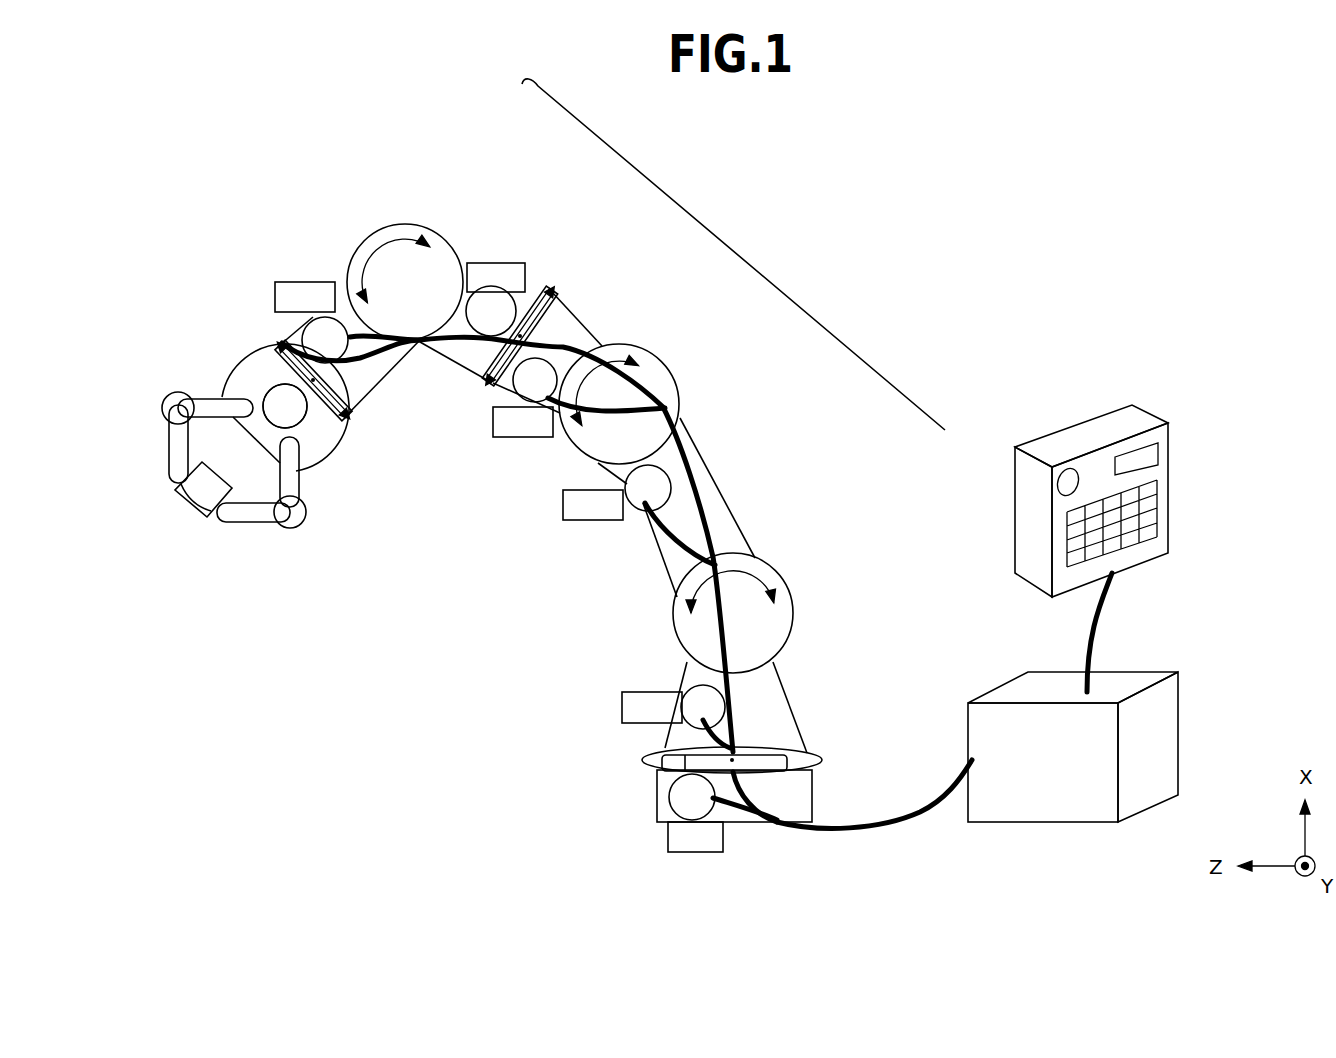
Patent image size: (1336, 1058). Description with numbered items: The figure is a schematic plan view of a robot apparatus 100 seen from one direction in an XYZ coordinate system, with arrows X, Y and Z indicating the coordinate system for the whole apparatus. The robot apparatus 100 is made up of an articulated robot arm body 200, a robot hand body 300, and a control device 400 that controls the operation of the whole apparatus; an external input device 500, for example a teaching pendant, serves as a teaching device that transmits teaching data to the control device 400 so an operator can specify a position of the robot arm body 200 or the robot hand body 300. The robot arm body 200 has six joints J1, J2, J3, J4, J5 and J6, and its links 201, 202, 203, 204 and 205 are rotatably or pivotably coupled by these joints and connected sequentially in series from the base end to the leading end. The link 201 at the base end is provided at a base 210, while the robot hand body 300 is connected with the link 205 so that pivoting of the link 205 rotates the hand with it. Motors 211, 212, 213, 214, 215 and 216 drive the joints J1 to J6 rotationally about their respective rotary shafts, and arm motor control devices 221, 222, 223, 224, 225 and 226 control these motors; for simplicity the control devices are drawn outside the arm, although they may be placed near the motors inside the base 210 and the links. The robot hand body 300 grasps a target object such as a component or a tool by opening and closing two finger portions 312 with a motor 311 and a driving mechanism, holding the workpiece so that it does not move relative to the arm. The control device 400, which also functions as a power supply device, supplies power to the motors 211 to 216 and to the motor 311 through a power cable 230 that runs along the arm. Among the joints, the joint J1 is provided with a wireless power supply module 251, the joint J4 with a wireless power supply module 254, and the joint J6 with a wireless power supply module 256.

The robot apparatus 100 is at (1029, 178).
The articulated robot arm body 200 is at (751, 263).
The link 201 is at (770, 703).
The link 202 is at (713, 500).
The link 203 is at (558, 330).
The link 204 is at (526, 268).
The link 205 is at (340, 300).
The base 210 is at (800, 792).
The motor 211 is at (680, 800).
The motor 212 is at (703, 718).
The motor 213 is at (645, 503).
The motor 214 is at (548, 375).
The motor 215 is at (480, 318).
The motor 216 is at (333, 347).
The arm motor control device 221 is at (695, 840).
The arm motor control device 222 is at (630, 707).
The arm motor control device 223 is at (590, 512).
The arm motor control device 224 is at (518, 425).
The arm motor control device 225 is at (487, 278).
The arm motor control device 226 is at (300, 292).
The power cable 230 is at (418, 340).
The wireless power supply module 251 is at (768, 764).
The wireless power supply module 254 is at (543, 290).
The wireless power supply module 256 is at (285, 343).
The robot hand body 300 is at (310, 550).
The motor 311 is at (274, 400).
The finger portions 312 is at (173, 463).
The control device 400 is at (1167, 735).
The external input device 500 is at (1085, 427).
The joint J1 is at (683, 762).
The joint J2 is at (685, 630).
The joint J3 is at (668, 392).
The joint J4 is at (489, 392).
The joint J5 is at (438, 245).
The joint J6 is at (345, 418).